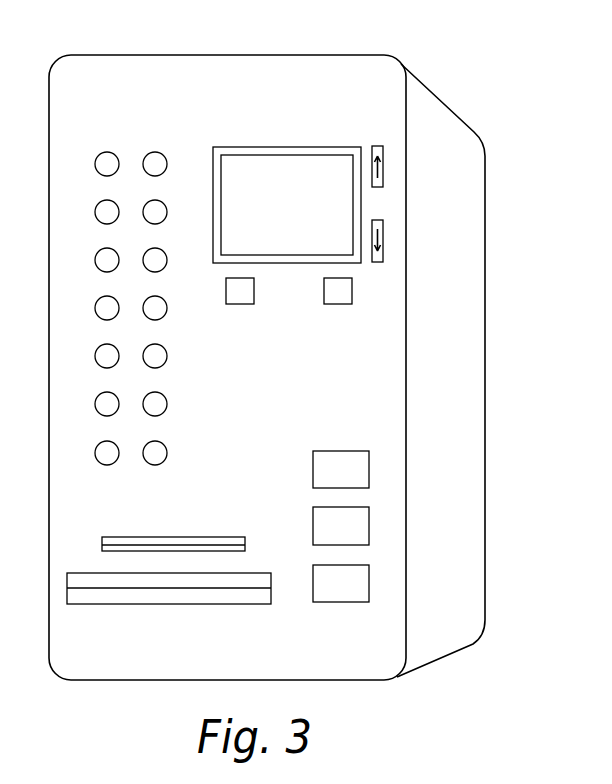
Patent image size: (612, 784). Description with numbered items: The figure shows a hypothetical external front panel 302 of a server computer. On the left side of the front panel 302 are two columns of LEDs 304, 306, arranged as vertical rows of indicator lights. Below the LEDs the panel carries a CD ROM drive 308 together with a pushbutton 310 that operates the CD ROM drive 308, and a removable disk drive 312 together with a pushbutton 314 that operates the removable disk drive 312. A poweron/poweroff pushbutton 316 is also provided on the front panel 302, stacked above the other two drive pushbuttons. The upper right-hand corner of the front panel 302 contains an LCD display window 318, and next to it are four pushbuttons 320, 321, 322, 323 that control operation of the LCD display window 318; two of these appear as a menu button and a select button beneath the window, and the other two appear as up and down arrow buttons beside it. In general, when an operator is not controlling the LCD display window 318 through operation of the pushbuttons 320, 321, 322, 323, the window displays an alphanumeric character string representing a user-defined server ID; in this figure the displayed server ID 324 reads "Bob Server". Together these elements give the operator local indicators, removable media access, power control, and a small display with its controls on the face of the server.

The front panel 302 is at (168, 78).
The column of LEDs 304 is at (100, 475).
The column of LEDs 306 is at (161, 480).
The CD ROM drive 308 is at (148, 605).
The pushbutton 310 is at (343, 603).
The removable disk drive 312 is at (246, 539).
The pushbutton 314 is at (369, 525).
The poweron/poweroff pushbutton 316 is at (352, 450).
The LCD display window 318 is at (324, 146).
The pushbutton 320 is at (226, 291).
The pushbutton 321 is at (352, 291).
The pushbutton 322 is at (384, 159).
The pushbutton 323 is at (384, 242).
The server ID 324 is at (245, 162).